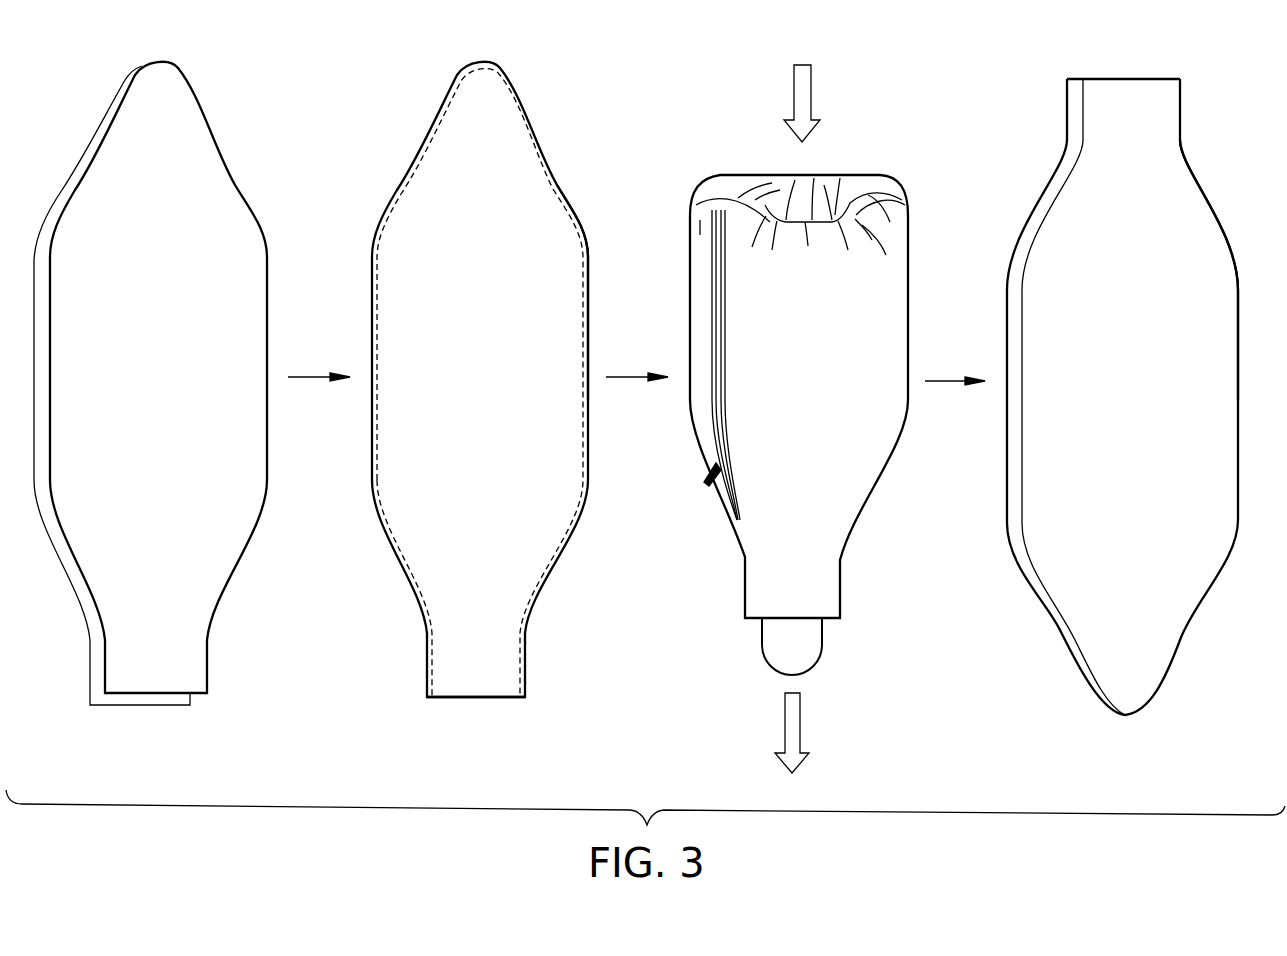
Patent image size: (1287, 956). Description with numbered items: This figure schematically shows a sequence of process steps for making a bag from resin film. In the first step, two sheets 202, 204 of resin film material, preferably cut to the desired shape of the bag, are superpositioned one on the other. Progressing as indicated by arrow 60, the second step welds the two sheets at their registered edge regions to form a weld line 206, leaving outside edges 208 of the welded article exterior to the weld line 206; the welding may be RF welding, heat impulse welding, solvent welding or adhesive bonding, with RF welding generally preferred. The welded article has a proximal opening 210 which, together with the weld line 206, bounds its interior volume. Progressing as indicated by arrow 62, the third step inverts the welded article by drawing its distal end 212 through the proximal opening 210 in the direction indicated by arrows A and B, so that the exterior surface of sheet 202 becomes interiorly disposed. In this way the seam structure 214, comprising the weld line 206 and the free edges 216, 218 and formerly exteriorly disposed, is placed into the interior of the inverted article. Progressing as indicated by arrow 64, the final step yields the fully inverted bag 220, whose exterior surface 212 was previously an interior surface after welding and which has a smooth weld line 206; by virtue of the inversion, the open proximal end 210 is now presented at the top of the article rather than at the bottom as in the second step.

The sheet 202 is at (198, 123).
The sheet 204 is at (88, 165).
The weld line 206 is at (450, 92).
The outside edges 208 is at (580, 215).
The proximal opening 210 is at (470, 700).
The distal end 212 is at (817, 647).
The seam structure 214 is at (708, 482).
The free edge 216 is at (715, 402).
The free edge 218 is at (725, 395).
The fully inverted bag 220 is at (1220, 222).
The arrow 60 is at (302, 378).
The arrow 62 is at (620, 378).
The arrow 64 is at (940, 382).
The arrow A is at (784, 713).
The arrow B is at (794, 90).